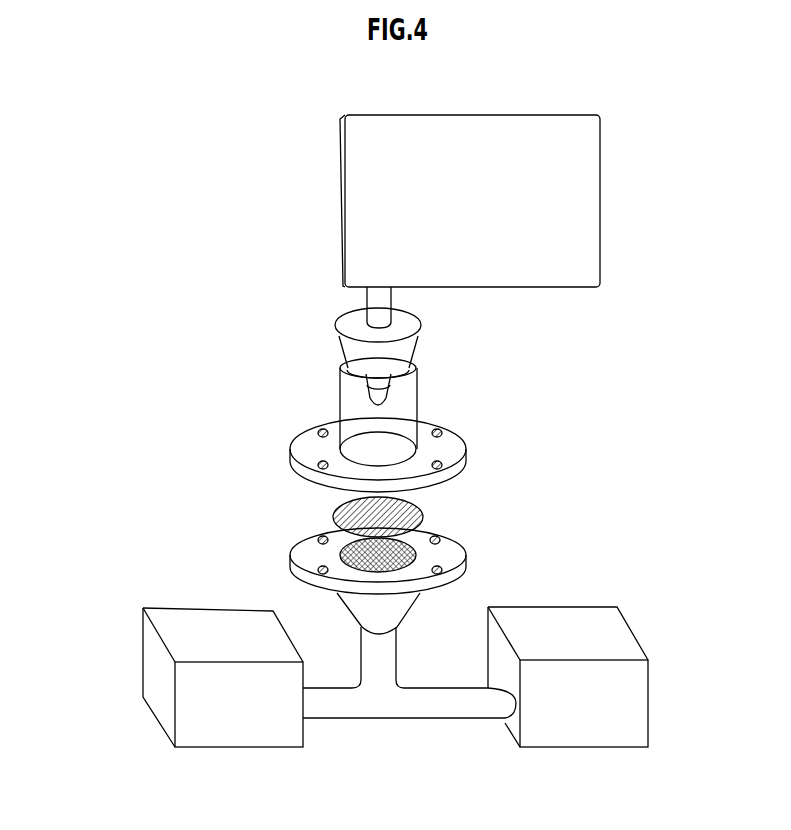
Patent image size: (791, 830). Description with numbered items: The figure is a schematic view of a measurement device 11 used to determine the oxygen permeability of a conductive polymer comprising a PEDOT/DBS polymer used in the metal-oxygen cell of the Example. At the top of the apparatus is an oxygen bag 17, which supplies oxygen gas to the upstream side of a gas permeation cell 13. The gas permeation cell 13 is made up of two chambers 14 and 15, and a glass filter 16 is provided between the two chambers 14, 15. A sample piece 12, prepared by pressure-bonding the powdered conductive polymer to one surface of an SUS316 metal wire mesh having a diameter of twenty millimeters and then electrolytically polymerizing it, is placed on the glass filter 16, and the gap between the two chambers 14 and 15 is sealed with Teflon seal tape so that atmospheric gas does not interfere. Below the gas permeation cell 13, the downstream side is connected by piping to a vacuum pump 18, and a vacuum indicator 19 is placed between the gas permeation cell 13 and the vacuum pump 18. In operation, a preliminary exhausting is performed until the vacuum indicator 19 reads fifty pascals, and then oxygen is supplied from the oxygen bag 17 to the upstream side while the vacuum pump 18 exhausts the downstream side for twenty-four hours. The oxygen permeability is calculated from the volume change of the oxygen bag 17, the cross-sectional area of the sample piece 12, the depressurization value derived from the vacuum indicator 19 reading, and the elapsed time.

The measurement device 11 is at (123, 227).
The sample piece 12 is at (424, 511).
The gas permeation cell 13 is at (230, 482).
The chamber 14 is at (299, 454).
The chamber 15 is at (300, 546).
The glass filter 16 is at (416, 552).
The oxygen bag 17 is at (540, 288).
The vacuum pump 18 is at (590, 748).
The vacuum indicator 19 is at (236, 748).